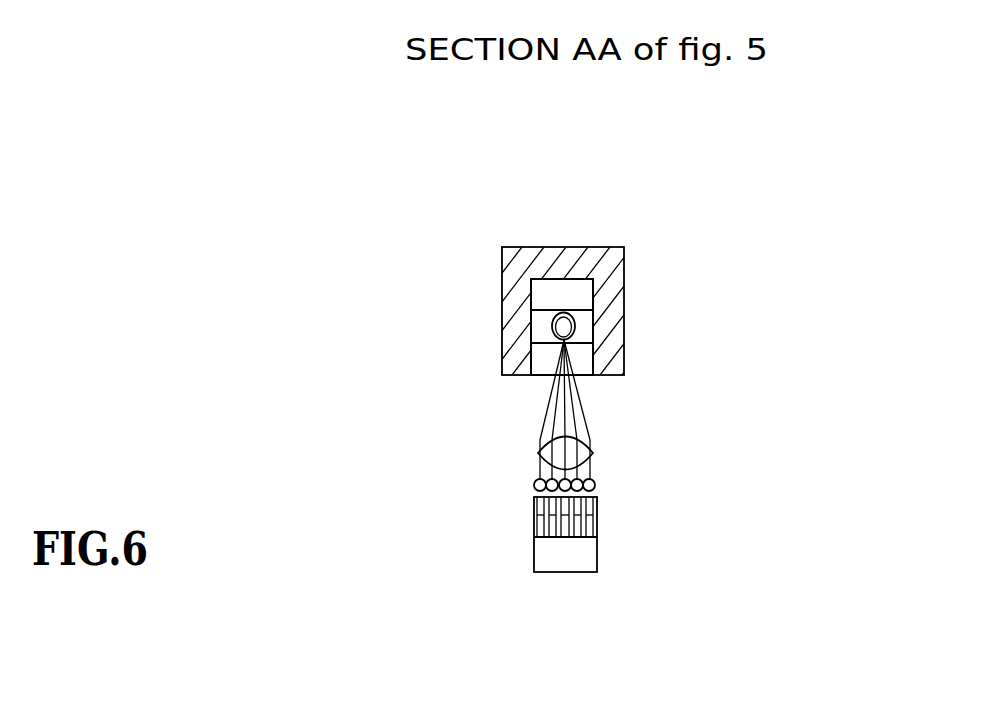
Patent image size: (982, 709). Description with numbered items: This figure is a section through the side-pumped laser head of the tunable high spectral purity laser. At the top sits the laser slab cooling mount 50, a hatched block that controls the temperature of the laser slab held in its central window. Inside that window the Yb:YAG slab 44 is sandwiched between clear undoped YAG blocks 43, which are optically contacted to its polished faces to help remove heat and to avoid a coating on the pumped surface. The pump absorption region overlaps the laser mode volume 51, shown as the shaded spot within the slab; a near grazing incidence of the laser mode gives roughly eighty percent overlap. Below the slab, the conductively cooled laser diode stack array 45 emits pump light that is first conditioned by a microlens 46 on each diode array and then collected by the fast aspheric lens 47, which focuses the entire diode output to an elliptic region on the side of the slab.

The clear undoped YAG block 43 is at (636, 246).
The Yb:YAG slab 44 is at (648, 297).
The conductively cooled laser diode stack array 45 is at (650, 567).
The microlens 46 is at (655, 468).
The aspheric lens 47 is at (479, 468).
The cooling mount 50 is at (537, 245).
The laser mode volume 51 is at (450, 345).